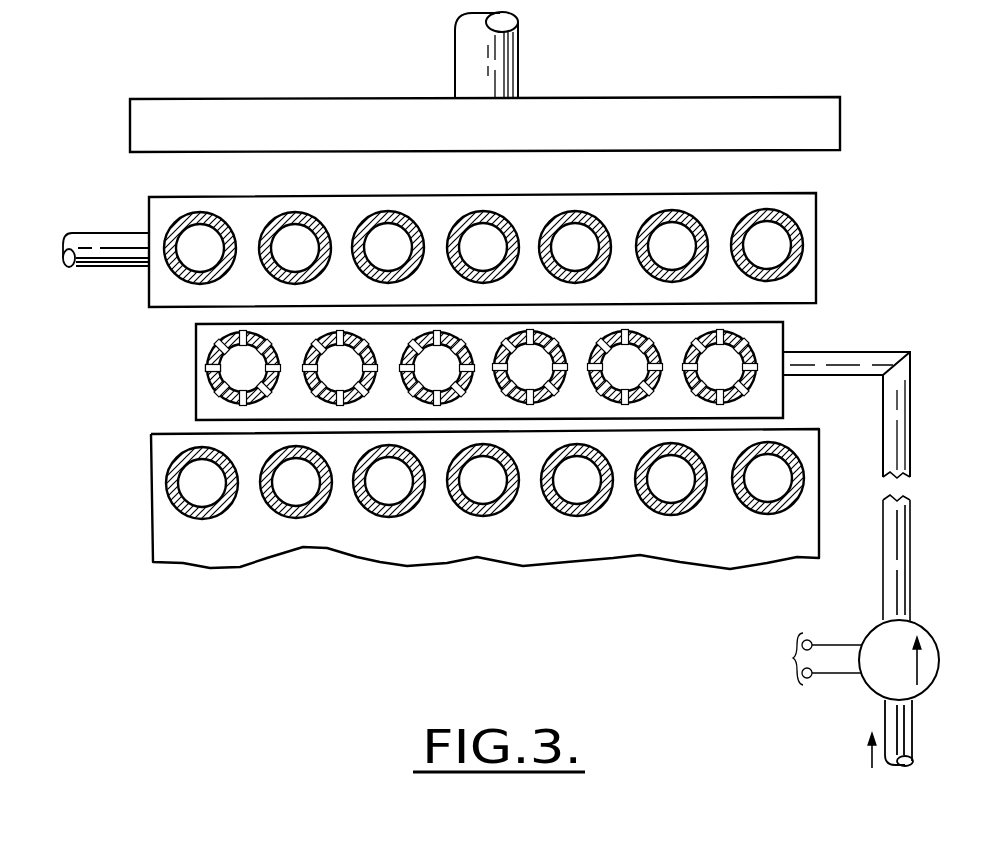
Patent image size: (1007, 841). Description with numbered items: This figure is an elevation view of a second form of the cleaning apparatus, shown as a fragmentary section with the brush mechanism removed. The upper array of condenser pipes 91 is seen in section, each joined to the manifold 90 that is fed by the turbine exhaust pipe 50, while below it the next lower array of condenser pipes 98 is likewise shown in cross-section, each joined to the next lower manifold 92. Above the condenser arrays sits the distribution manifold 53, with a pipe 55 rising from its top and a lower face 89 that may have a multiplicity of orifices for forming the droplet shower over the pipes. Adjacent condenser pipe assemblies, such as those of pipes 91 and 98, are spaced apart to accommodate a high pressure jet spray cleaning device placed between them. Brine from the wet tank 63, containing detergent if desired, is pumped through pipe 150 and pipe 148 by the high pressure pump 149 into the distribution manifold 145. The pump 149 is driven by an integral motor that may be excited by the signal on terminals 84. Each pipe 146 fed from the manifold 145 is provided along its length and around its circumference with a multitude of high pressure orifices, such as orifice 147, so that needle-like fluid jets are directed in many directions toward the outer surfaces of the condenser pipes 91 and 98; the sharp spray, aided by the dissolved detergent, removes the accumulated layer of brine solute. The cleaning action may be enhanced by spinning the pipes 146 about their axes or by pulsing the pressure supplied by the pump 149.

The distribution manifold 53 is at (731, 97).
The supply conduit 55 is at (456, 40).
The lower face 89 is at (446, 153).
The manifold 90 is at (272, 197).
The condenser pipes 91 is at (170, 268).
The turbine exhaust pipe 50 is at (100, 233).
The distribution manifold 145 is at (783, 400).
The pipes 146 is at (212, 350).
The orifice 147 is at (210, 370).
The manifold 92 is at (150, 472).
The condenser pipes 98 is at (172, 505).
The pipe 148 is at (856, 352).
The high pressure pump 149 is at (872, 633).
The terminals 84 is at (808, 659).
The pipe 150 is at (885, 728).
The wet tank 63 is at (920, 817).